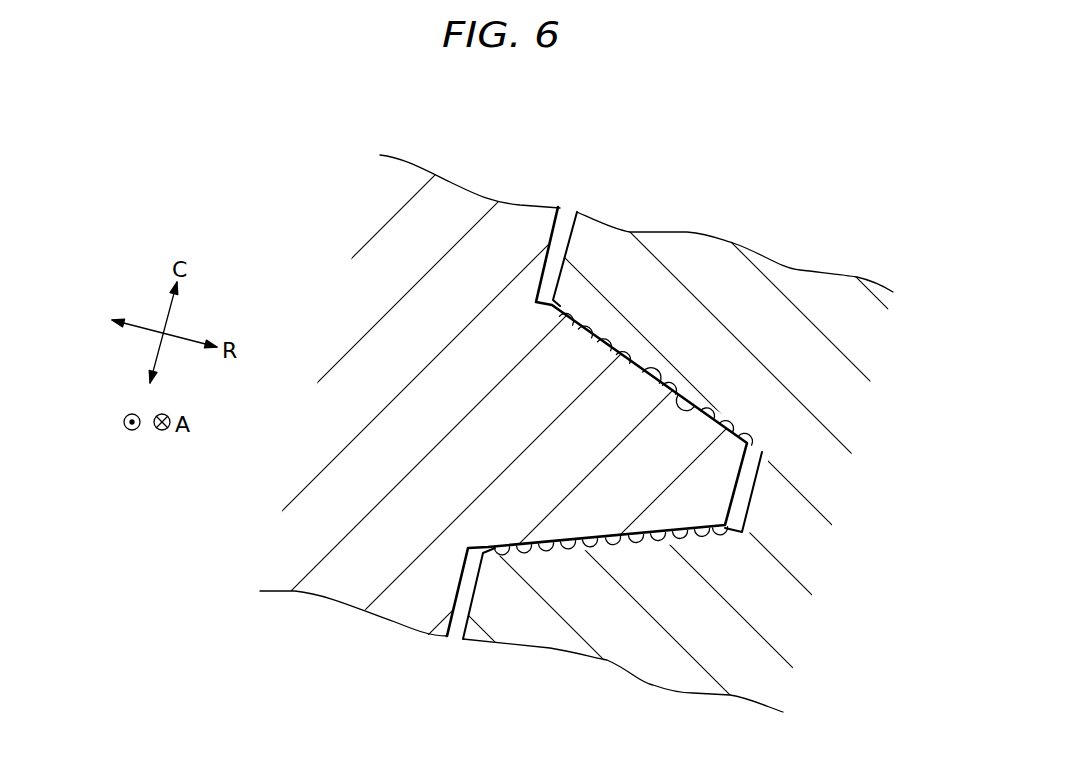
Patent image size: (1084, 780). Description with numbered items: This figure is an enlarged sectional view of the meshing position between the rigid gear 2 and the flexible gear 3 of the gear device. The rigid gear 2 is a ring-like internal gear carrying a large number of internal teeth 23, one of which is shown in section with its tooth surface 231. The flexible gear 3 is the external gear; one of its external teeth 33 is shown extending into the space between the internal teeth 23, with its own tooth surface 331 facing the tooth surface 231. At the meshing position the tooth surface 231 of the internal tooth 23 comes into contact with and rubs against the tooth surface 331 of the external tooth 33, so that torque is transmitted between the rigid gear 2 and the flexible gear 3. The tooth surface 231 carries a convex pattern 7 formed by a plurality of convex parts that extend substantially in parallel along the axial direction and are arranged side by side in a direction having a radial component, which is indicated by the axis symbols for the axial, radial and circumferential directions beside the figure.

The rigid gear 2 is at (709, 219).
The internal teeth 23 is at (643, 278).
The tooth surface 231 is at (690, 405).
The flexible gear 3 is at (462, 168).
The external tooth 33 is at (594, 437).
The tooth surface 331 is at (649, 392).
The convex pattern 7 is at (735, 408).